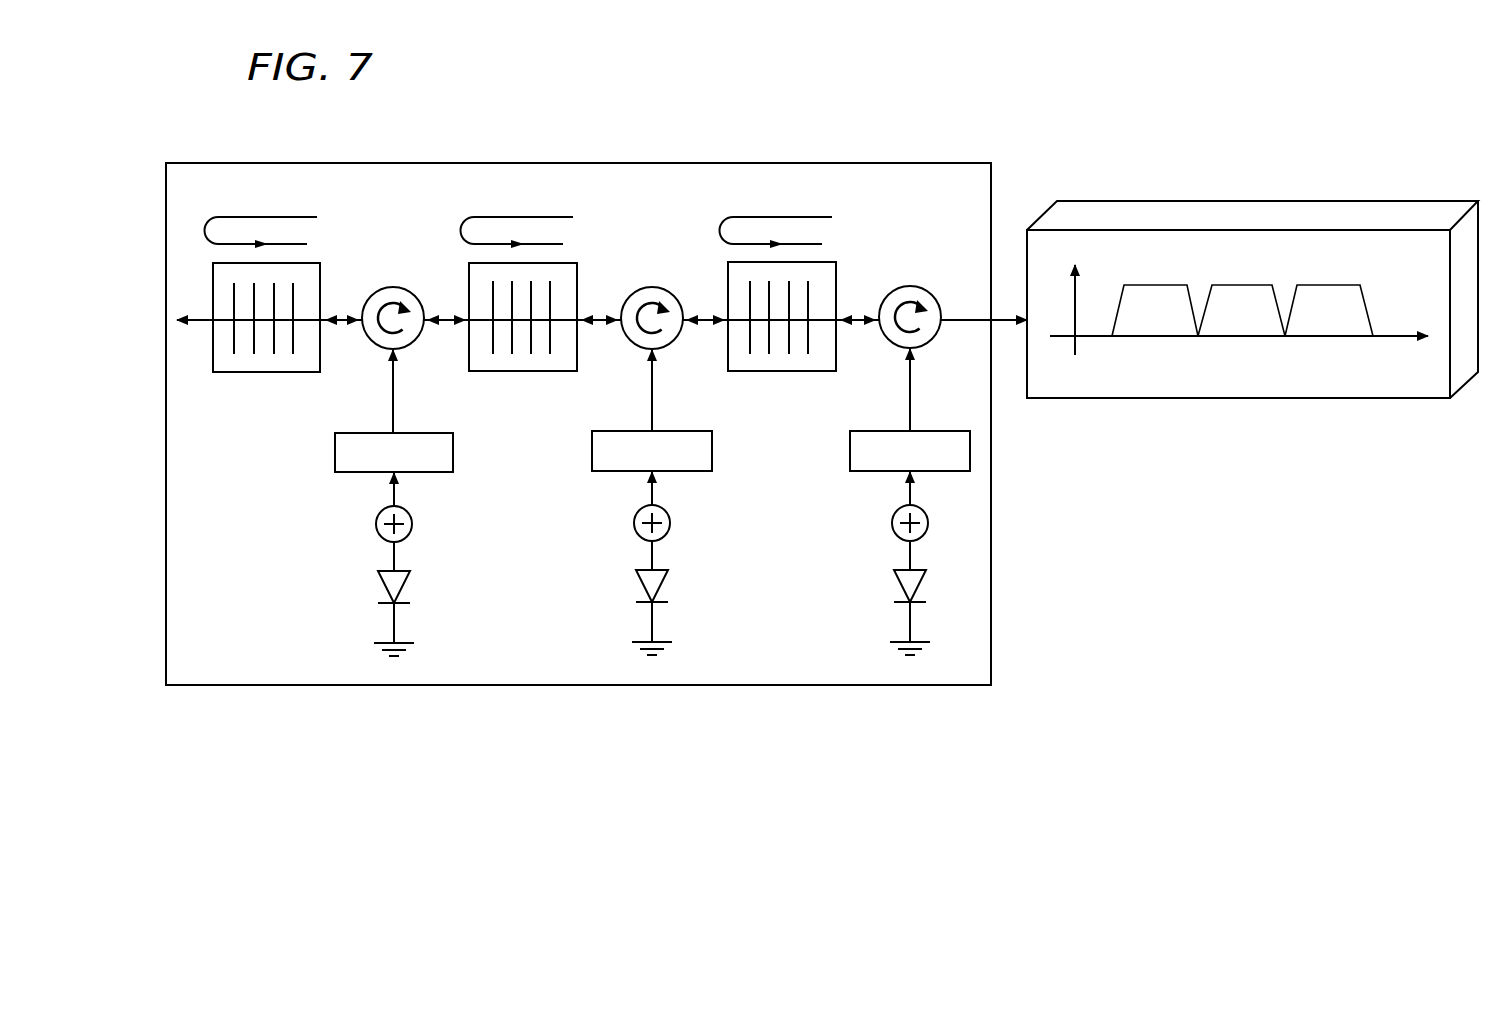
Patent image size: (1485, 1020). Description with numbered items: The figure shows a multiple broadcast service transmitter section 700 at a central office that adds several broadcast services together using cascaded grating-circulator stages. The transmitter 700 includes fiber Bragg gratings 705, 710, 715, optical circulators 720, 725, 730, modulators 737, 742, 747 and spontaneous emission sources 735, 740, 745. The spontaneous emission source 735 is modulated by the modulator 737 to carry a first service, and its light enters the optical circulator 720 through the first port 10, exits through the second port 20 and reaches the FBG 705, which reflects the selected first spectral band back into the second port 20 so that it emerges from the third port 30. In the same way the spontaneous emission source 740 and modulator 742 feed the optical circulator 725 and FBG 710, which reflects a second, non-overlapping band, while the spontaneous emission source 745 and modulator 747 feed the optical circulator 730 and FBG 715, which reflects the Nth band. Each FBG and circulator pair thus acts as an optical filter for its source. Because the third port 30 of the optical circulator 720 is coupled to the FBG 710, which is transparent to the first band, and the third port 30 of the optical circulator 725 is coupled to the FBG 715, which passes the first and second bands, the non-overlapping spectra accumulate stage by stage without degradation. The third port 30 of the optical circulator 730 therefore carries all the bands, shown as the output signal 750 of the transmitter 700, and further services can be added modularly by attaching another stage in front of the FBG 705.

The multiple broadcast service transmitter section 700 is at (634, 163).
The fiber Bragg grating 705 is at (243, 372).
The fiber Bragg grating 710 is at (508, 372).
The fiber Bragg grating 715 is at (767, 374).
The optical circulator 720 is at (394, 287).
The optical circulator 725 is at (652, 287).
The optical circulator 730 is at (908, 286).
The spontaneous emission source 735 is at (376, 523).
The modulator 737 is at (335, 452).
The spontaneous emission source 740 is at (634, 522).
The modulator 742 is at (592, 451).
The spontaneous emission source 745 is at (892, 522).
The modulator 747 is at (850, 451).
The output signal 750 is at (1188, 212).
The first port 10 is at (636, 391).
The second port 20 is at (600, 303).
The third port 30 is at (727, 303).